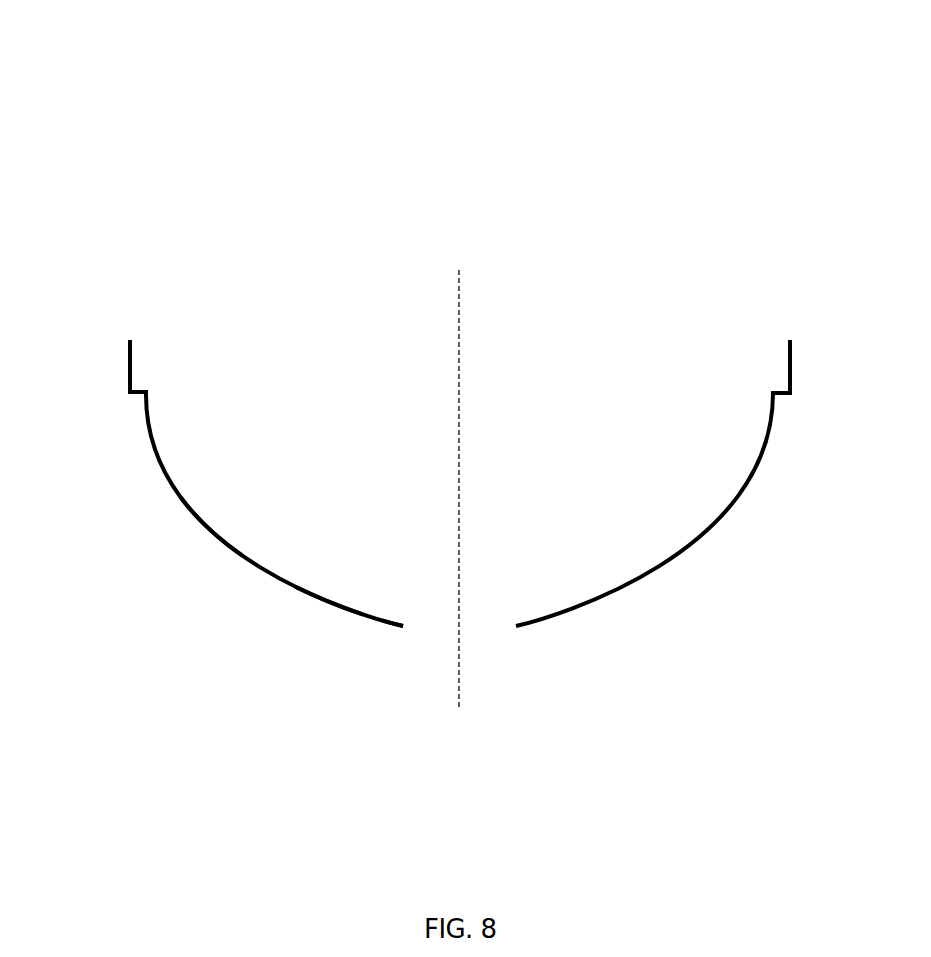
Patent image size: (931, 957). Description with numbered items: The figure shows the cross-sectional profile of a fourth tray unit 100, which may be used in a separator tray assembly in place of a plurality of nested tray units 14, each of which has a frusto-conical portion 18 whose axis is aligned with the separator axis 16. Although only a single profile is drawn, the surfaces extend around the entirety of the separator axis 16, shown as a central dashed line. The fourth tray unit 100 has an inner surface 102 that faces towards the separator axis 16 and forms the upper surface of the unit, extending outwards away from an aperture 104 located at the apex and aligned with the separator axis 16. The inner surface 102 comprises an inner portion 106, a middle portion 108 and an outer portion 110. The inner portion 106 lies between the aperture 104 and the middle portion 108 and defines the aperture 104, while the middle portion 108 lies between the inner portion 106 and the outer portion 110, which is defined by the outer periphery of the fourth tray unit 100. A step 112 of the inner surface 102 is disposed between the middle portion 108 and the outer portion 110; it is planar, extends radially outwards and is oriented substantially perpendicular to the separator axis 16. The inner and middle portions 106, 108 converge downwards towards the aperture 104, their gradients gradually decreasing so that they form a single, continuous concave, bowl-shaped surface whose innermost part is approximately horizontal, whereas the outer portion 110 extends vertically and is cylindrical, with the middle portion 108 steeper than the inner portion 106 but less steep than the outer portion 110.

The fourth tray unit 100 is at (637, 118).
The tray unit 14 is at (237, 318).
The separator axis 16 is at (462, 300).
The frusto-conical portion 18 is at (727, 507).
The inner surface 102 is at (293, 530).
The aperture 104 is at (451, 634).
The inner portion 106 is at (330, 603).
The middle portion 108 is at (212, 530).
The outer portion 110 is at (128, 365).
The step 112 is at (138, 396).